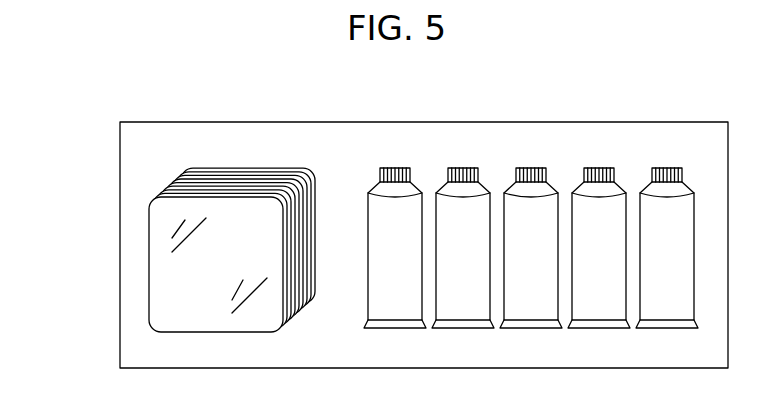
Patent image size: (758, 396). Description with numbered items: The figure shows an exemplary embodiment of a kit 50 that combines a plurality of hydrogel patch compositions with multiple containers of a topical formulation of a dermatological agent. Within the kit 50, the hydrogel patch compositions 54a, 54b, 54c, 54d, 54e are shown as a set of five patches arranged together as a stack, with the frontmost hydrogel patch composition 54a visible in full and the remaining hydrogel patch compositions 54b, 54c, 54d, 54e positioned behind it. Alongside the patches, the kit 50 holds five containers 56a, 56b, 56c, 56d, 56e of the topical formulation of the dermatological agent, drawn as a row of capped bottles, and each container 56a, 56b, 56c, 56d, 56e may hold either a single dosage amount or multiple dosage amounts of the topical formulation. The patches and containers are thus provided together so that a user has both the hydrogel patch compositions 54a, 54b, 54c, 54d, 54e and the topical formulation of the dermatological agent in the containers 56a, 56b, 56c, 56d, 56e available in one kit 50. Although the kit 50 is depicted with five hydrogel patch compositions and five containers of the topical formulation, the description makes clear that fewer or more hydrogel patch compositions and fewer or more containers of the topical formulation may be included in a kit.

The kit 50 is at (90, 218).
The hydrogel patch composition 54a is at (238, 264).
The hydrogel patch composition 54b is at (172, 186).
The hydrogel patch composition 54c is at (185, 179).
The hydrogel patch composition 54d is at (197, 175).
The hydrogel patch composition 54e is at (212, 168).
The container of a topical formulation of a dermatological agent 56a is at (393, 168).
The container of a topical formulation of a dermatological agent 56b is at (461, 168).
The container of a topical formulation of a dermatological agent 56c is at (529, 168).
The container of a topical formulation of a dermatological agent 56d is at (597, 168).
The container of a topical formulation of a dermatological agent 56e is at (665, 168).